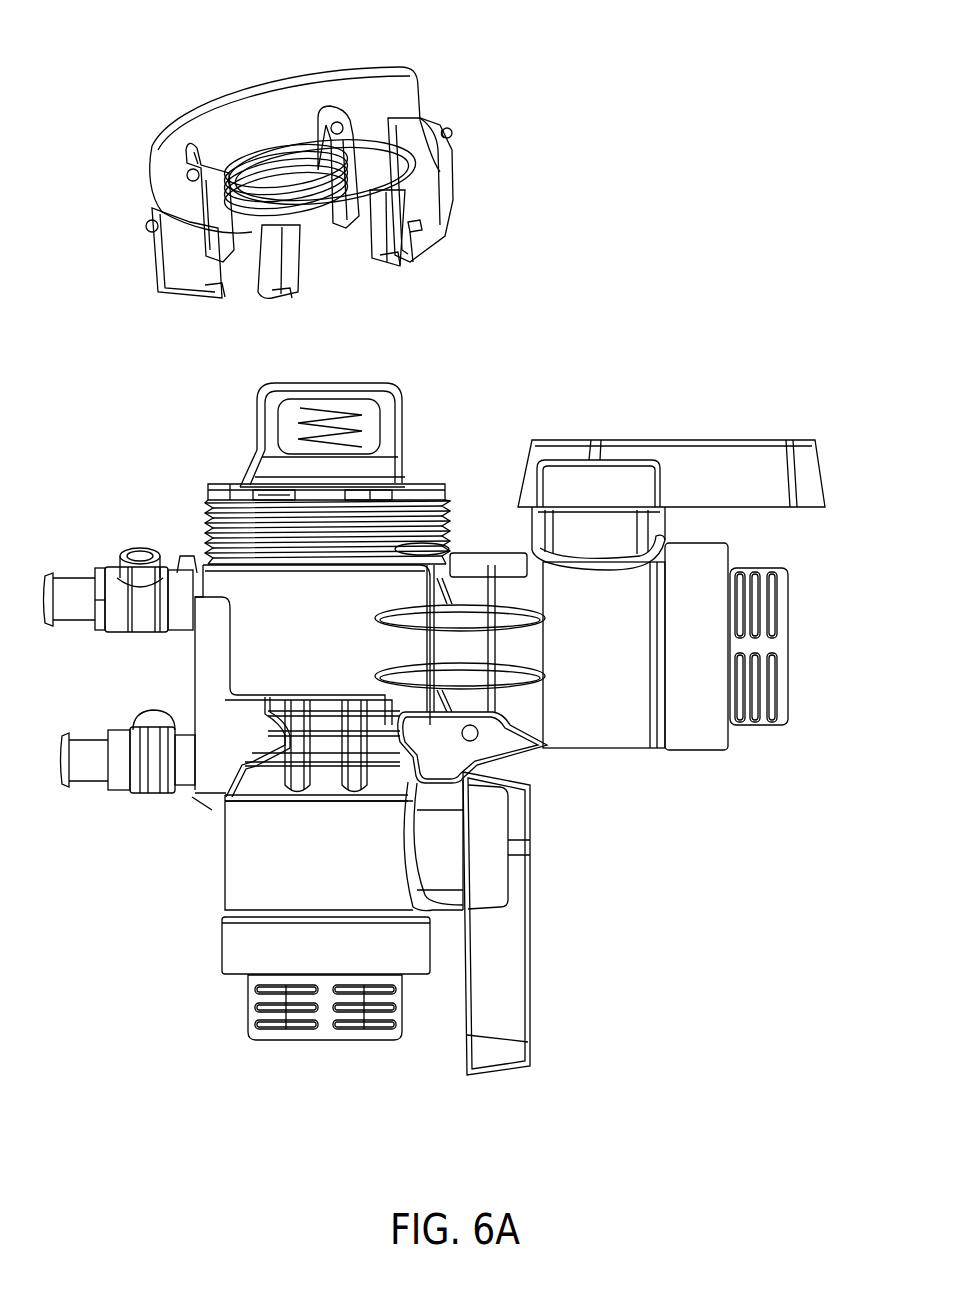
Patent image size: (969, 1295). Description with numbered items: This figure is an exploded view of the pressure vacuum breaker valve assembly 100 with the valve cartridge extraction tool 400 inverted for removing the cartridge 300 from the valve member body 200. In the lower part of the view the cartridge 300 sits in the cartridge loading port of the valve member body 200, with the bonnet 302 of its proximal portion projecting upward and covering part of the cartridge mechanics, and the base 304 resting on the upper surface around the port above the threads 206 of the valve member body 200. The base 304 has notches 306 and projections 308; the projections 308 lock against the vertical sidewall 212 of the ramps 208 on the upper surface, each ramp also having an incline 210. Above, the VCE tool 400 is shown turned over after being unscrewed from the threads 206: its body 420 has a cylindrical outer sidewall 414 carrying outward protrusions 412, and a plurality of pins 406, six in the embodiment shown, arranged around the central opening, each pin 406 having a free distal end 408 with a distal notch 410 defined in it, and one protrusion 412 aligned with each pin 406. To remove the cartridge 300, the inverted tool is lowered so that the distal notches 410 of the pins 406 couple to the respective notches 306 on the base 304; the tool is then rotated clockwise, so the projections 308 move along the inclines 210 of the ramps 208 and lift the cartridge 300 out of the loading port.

The valve assembly 100 is at (676, 113).
The valve member body 200 is at (826, 428).
The threads 206 is at (243, 525).
The ramps 208 is at (308, 500).
The inclines 210 is at (342, 498).
The vertical sidewall 212 is at (300, 493).
The cartridge 300 is at (386, 483).
The bonnet 302 is at (378, 412).
The base 304 is at (446, 495).
The notches 306 is at (280, 490).
The projections 308 is at (272, 498).
The valve cartridge extraction (VCE) tool 400 is at (135, 66).
The pins 406 is at (430, 176).
The free distal end 408 is at (420, 226).
The distal notch 410 is at (416, 230).
The outward protrusions 412 is at (456, 130).
The cylindrical outer sidewall 414 is at (352, 76).
The body 420 is at (238, 136).